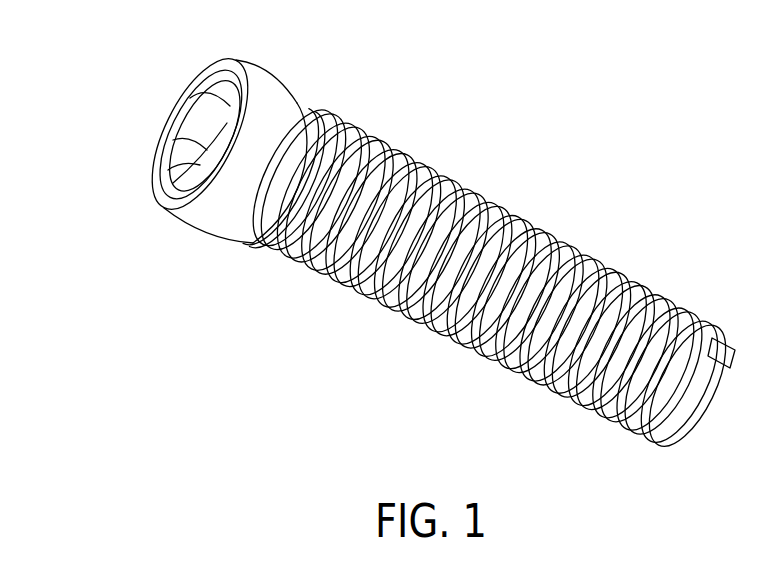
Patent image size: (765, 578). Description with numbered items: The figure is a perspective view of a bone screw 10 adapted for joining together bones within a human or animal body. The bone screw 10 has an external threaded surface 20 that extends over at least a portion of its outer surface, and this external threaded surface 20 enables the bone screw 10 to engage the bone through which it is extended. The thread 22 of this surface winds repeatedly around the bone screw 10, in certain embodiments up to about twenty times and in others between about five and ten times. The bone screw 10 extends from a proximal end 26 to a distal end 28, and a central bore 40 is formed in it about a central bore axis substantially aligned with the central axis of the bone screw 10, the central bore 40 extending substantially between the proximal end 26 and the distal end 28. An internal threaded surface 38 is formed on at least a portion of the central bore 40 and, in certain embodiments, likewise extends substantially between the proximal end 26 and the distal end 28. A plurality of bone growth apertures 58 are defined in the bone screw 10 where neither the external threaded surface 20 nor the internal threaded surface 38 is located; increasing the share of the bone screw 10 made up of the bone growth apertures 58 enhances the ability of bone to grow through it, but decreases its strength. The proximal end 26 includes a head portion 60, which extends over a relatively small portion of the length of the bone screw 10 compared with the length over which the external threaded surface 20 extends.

The bone screw 10 is at (278, 332).
The external threaded surface 20 is at (523, 215).
The thread 22 is at (547, 384).
The proximal end 26 is at (153, 192).
The distal end 28 is at (707, 419).
The internal threaded surface 38 is at (192, 103).
The central bore 40 is at (190, 147).
The bone growth apertures 58 is at (381, 284).
The head portion 60 is at (277, 88).